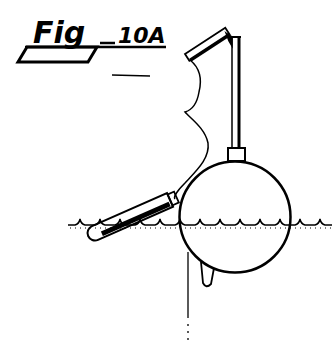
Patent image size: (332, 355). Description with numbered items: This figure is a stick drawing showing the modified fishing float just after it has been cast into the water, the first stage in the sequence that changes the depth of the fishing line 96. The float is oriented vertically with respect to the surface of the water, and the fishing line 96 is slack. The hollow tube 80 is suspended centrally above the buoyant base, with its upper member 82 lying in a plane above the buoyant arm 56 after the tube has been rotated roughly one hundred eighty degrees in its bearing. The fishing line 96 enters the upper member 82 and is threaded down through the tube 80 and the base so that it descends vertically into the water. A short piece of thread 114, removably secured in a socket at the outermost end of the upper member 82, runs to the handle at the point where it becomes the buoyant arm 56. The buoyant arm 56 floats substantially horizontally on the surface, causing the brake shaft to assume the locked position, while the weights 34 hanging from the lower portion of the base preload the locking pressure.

The weights 34 is at (208, 285).
The buoyant arm 56 is at (120, 215).
The hollow tube 80 is at (242, 105).
The upper member 82 is at (198, 44).
The fishing line 96 is at (190, 58).
The thread 114 is at (185, 112).